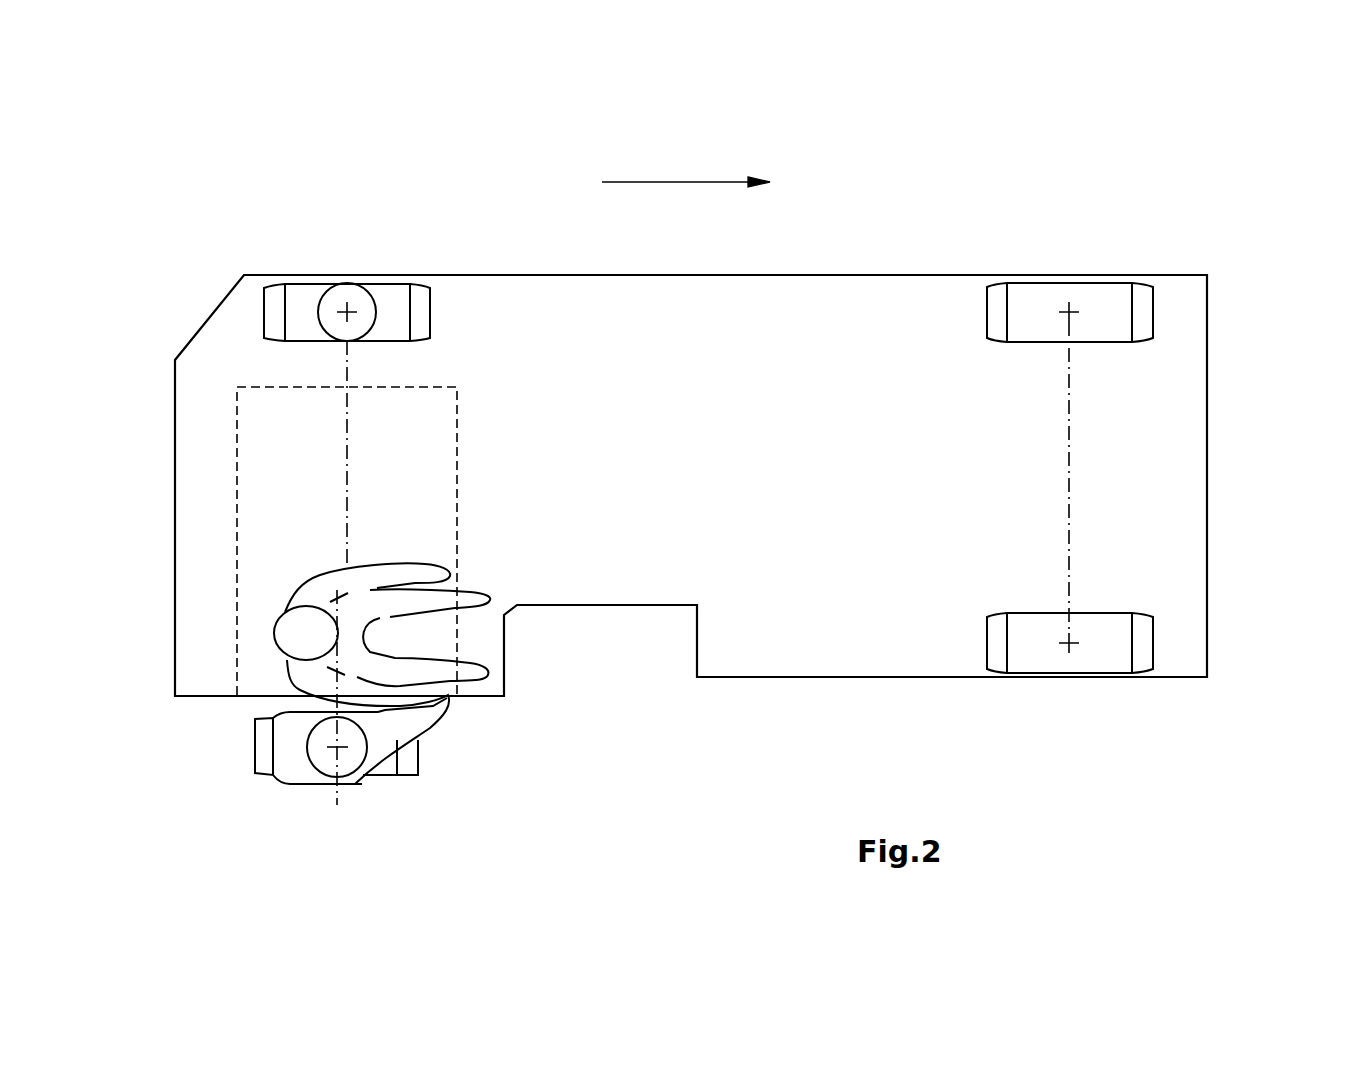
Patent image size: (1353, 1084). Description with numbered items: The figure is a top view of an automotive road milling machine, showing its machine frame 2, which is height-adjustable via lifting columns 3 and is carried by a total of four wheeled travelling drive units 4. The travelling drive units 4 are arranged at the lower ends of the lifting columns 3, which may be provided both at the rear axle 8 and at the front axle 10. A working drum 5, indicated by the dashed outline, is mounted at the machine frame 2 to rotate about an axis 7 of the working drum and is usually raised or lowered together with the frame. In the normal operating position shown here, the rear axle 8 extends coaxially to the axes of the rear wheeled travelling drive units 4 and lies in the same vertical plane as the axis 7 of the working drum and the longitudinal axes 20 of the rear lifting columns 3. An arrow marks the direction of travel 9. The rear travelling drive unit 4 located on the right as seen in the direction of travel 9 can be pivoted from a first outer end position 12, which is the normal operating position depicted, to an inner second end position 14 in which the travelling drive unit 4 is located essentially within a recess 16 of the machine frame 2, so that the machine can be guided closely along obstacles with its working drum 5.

The machine frame 2 is at (1135, 463).
The lifting column 3 is at (327, 755).
The travelling drive unit 4 is at (391, 300).
The working drum 5 is at (415, 453).
The axis of the working drum 7 is at (218, 573).
The rear axle 8 is at (347, 458).
The direction of travel 9 is at (650, 182).
The front axle 10 is at (1069, 507).
The first outer end position 12 is at (227, 782).
The inner second end position 14 is at (710, 752).
The recess 16 is at (639, 678).
The longitudinal axis of the rear lifting column 20 is at (344, 311).